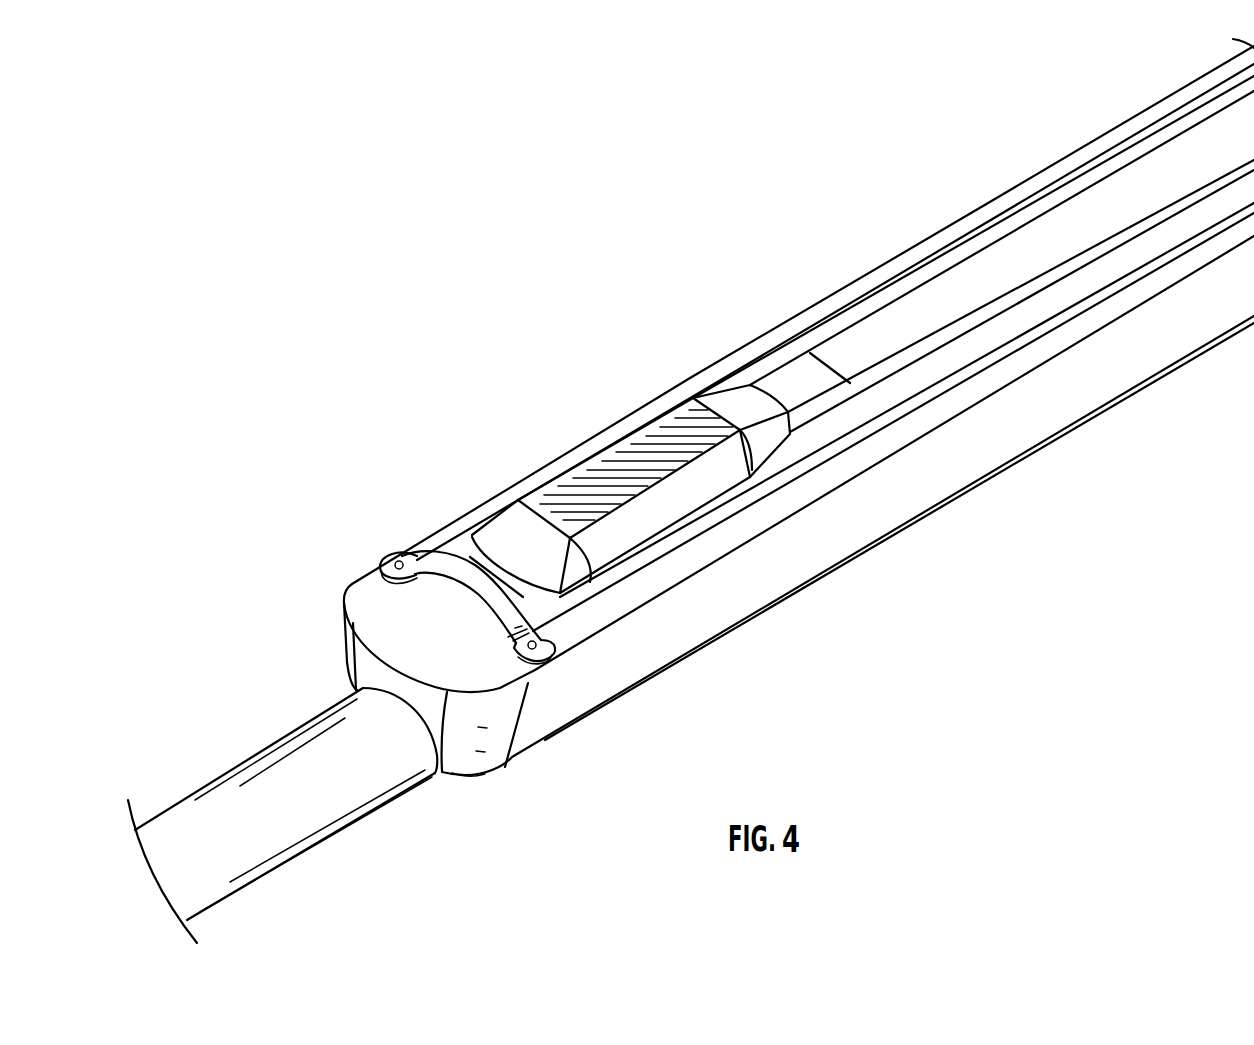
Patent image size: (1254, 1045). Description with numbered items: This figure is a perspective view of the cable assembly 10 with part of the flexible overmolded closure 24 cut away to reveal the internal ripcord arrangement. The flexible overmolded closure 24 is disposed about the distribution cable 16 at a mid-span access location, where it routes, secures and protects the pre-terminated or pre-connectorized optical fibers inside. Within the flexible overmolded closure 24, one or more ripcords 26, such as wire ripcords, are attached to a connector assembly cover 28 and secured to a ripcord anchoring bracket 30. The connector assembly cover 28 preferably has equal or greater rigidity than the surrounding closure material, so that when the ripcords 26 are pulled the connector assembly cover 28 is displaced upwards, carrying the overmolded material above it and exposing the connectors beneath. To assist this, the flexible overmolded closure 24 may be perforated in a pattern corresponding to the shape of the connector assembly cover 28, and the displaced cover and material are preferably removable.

The cable assembly 10 is at (897, 563).
The distribution cable 16 is at (225, 772).
The flexible overmolded closure 24 is at (993, 475).
The ripcord 26 is at (627, 577).
The connector assembly cover 28 is at (890, 323).
The ripcord anchoring bracket 30 is at (458, 567).